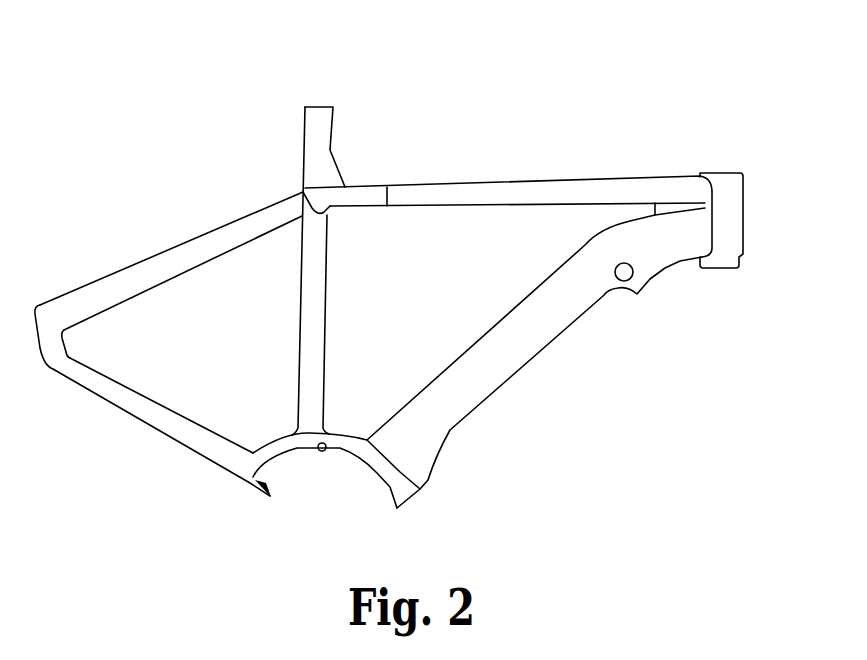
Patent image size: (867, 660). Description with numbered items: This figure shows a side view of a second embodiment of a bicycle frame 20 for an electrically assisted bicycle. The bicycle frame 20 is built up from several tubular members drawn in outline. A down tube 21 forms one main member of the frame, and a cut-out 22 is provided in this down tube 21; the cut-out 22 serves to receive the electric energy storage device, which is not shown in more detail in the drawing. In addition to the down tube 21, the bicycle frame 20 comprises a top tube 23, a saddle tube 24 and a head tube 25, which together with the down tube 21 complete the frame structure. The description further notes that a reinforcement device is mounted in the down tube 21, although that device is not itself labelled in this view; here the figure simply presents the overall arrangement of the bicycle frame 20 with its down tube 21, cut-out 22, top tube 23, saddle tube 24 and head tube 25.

The bicycle frame 20 is at (769, 108).
The down tube 21 is at (495, 372).
The cut-out 22 is at (590, 350).
The top tube 23 is at (571, 192).
The saddle tube 24 is at (316, 277).
The head tube 25 is at (730, 213).